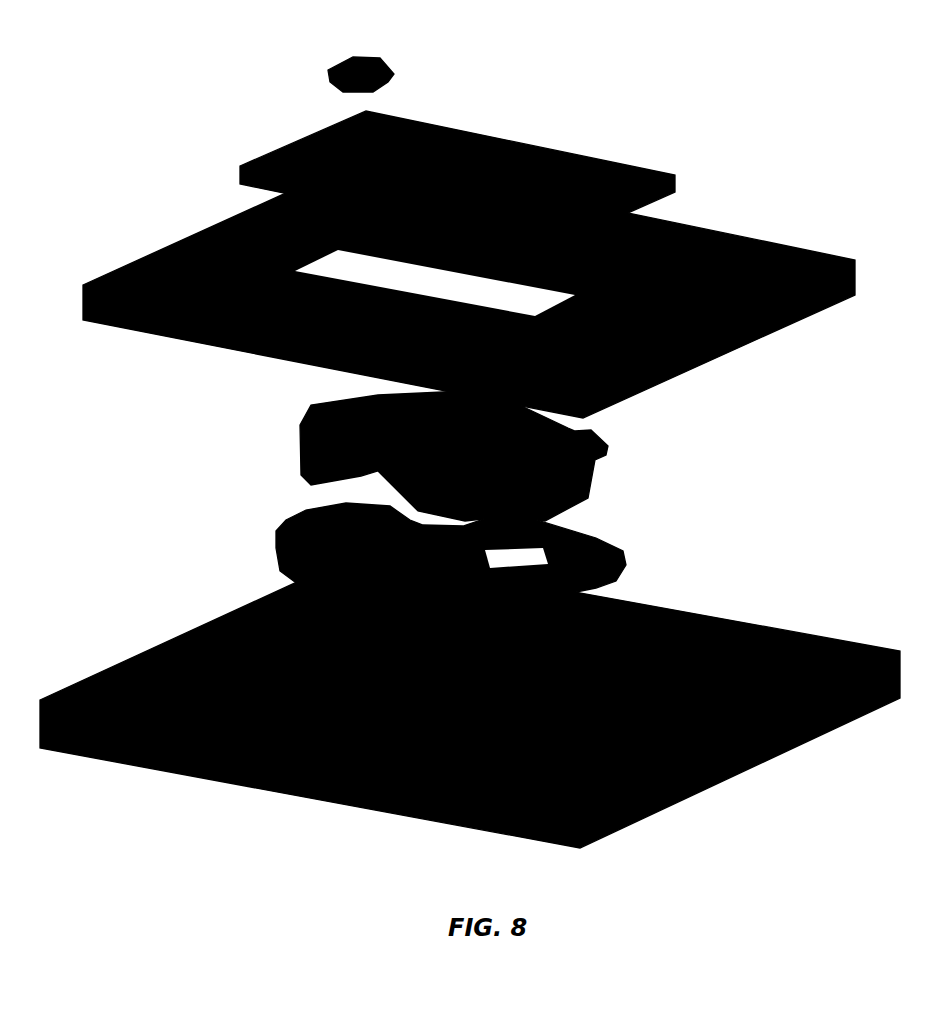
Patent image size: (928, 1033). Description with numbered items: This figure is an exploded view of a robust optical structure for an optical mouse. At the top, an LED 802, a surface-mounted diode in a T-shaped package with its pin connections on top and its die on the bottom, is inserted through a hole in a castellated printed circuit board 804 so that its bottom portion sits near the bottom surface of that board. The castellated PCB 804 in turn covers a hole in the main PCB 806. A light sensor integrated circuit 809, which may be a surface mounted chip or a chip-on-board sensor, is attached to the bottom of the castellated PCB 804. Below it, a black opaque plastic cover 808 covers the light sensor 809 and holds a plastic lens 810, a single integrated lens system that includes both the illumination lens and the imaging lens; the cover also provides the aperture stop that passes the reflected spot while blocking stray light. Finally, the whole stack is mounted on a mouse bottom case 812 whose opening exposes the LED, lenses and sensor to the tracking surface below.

The LED 802 is at (377, 62).
The castellated printed circuit board 804 is at (538, 157).
The main PCB 806 is at (755, 232).
The black plastic cover 808 is at (585, 463).
The light sensor integrated circuit 809 is at (437, 423).
The plastic lens 810 is at (605, 537).
The mouse bottom case 812 is at (750, 613).